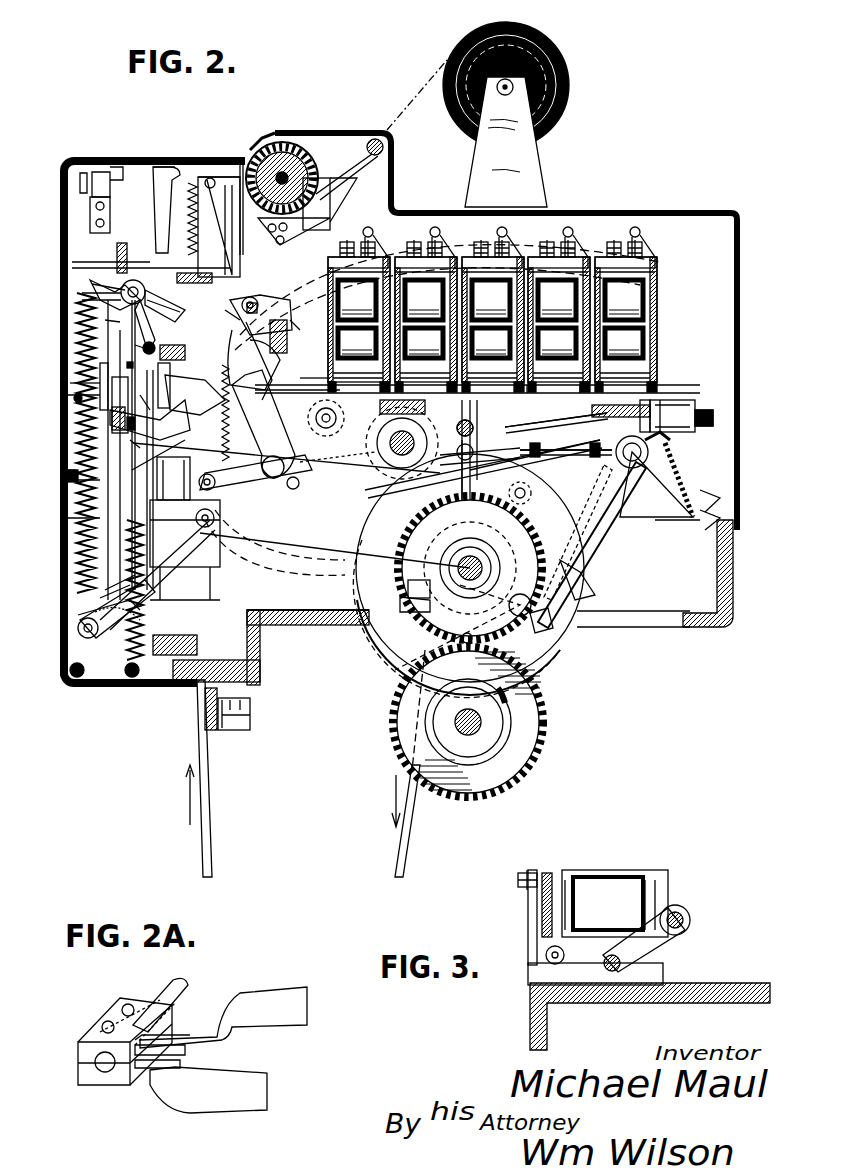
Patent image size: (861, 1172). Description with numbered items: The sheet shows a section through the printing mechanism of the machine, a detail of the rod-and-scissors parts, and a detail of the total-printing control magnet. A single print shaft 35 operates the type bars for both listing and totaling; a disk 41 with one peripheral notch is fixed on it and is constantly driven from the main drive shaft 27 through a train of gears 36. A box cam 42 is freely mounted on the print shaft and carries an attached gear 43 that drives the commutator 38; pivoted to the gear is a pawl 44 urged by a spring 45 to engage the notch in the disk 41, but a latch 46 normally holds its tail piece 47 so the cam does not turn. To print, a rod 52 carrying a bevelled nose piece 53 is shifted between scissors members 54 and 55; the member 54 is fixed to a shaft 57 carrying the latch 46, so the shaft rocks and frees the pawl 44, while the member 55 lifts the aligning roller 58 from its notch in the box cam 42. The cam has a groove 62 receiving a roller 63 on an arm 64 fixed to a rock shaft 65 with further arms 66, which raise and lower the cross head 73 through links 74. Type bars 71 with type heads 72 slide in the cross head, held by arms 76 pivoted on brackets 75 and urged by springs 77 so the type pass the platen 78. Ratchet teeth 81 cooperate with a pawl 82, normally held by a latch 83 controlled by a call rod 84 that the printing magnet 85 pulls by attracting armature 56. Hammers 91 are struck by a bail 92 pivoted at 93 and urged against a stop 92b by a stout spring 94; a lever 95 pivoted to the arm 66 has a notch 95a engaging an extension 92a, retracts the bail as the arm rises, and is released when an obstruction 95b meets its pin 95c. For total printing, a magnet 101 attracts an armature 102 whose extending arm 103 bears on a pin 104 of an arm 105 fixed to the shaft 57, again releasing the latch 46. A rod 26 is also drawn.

In FIG. 2, the push rod 26 is at (208, 813).
In FIG. 2, the main drive shaft 27 is at (308, 418).
In FIG. 2, the print shaft 35 is at (420, 617).
In FIG. 2, the train of gears 36 is at (415, 545).
In FIG. 2, the commutator 38 is at (510, 735).
In FIG. 2, the disk 41 is at (547, 520).
In FIG. 2, the box cam 42 is at (587, 597).
In FIG. 2, the gear 43 is at (373, 607).
In FIG. 2, the pawl 44 is at (545, 665).
In FIG. 2, the spring 45 is at (427, 610).
In FIG. 2, the latch 46 is at (603, 527).
In FIG. 2, the tail piece 47 is at (555, 630).
In FIG. 2, the rod 52 is at (465, 420).
In FIG. 2A, the rod 52 is at (107, 1068).
In FIG. 2, the nose piece 53 is at (507, 443).
In FIG. 2A, the nose piece 53 is at (190, 1007).
In FIG. 2, the scissors member 54 is at (567, 427).
In FIG. 2A, the scissors member 54 is at (275, 997).
In FIG. 2, the scissors member 55 is at (570, 427).
In FIG. 2, the armature 56 is at (593, 380).
In FIG. 2A, the armature 56 is at (248, 1088).
In FIG. 2, the shaft 57 is at (640, 447).
In FIG. 3, the shaft 57 is at (685, 917).
In FIG. 2, the aligning roller 58 is at (527, 390).
In FIG. 2, the groove 62 is at (630, 500).
In FIG. 2, the roller 63 is at (527, 483).
In FIG. 2, the arm 64 is at (407, 517).
In FIG. 2, the rock shaft 65 is at (377, 473).
In FIG. 2, the arms 66 is at (293, 490).
In FIG. 2, the type bars 71 is at (223, 443).
In FIG. 2, the type head 72 is at (210, 183).
In FIG. 2, the cross head 73 is at (203, 540).
In FIG. 2, the links 74 is at (215, 488).
In FIG. 2, the brackets 75 is at (77, 620).
In FIG. 2, the arms 76 is at (110, 632).
In FIG. 2, the springs 77 is at (80, 593).
In FIG. 2, the platen 78 is at (310, 143).
In FIG. 2, the ratchet teeth 81 is at (133, 460).
In FIG. 2, the pawl 82 is at (333, 388).
In FIG. 2, the latch 83 is at (296, 330).
In FIG. 2, the call rod 84 is at (307, 380).
In FIG. 2, the printing magnet 85 is at (623, 342).
In FIG. 2, the hammers 91 is at (153, 180).
In FIG. 2, the bail 92 is at (150, 283).
In FIG. 2, the extension 92a is at (135, 344).
In FIG. 2, the stop 92b is at (105, 320).
In FIG. 2, the pivot 93 is at (130, 292).
In FIG. 2, the spring 94 is at (80, 372).
In FIG. 2, the lever 95 is at (145, 395).
In FIG. 2, the notch 95a is at (135, 365).
In FIG. 2, the obstruction 95b is at (230, 313).
In FIG. 2, the pin 95c is at (133, 443).
In FIG. 3, the magnet 101 is at (607, 880).
In FIG. 3, the armature 102 is at (553, 873).
In FIG. 3, the extending arm 103 is at (587, 960).
In FIG. 3, the pin 104 is at (610, 967).
In FIG. 3, the arm 105 is at (657, 957).